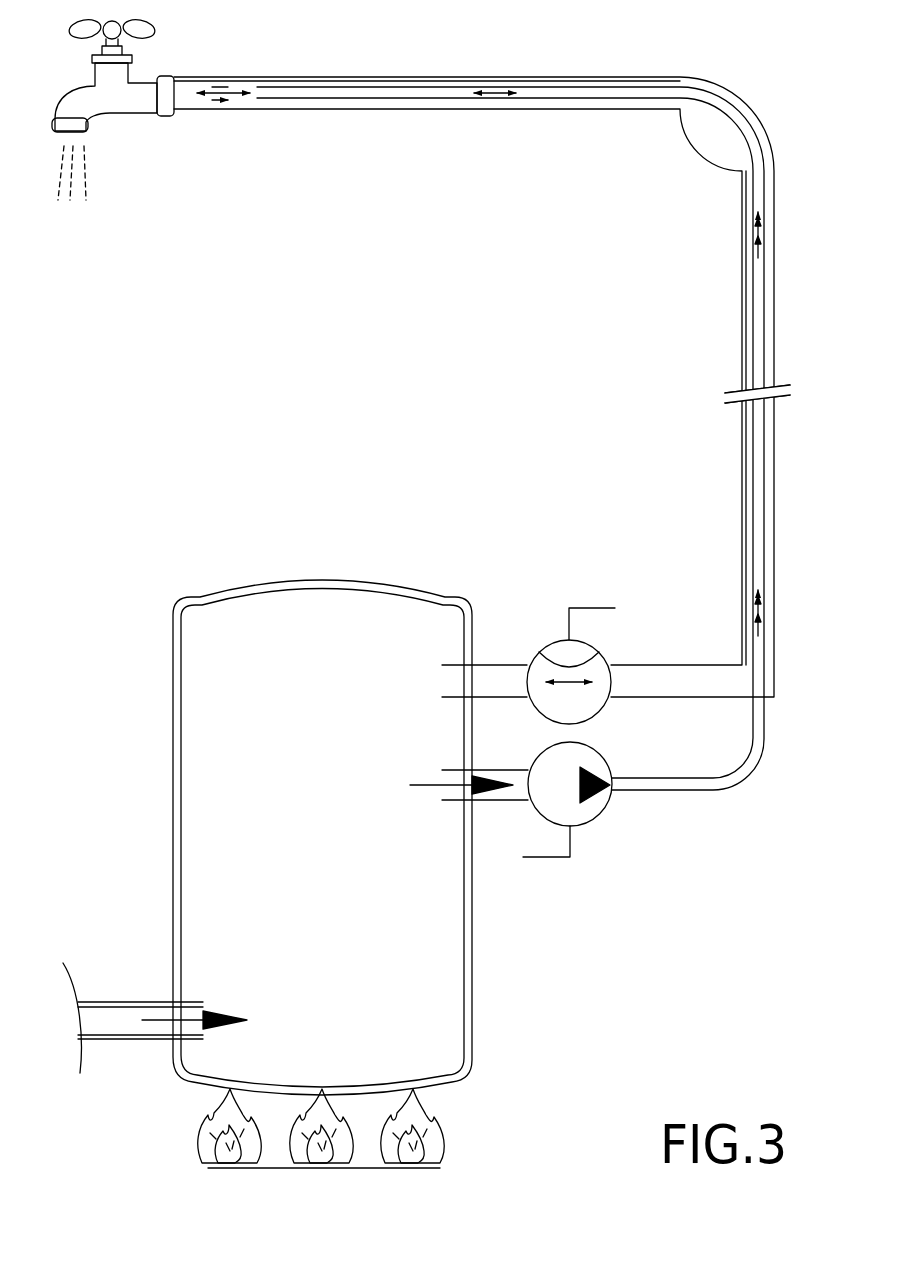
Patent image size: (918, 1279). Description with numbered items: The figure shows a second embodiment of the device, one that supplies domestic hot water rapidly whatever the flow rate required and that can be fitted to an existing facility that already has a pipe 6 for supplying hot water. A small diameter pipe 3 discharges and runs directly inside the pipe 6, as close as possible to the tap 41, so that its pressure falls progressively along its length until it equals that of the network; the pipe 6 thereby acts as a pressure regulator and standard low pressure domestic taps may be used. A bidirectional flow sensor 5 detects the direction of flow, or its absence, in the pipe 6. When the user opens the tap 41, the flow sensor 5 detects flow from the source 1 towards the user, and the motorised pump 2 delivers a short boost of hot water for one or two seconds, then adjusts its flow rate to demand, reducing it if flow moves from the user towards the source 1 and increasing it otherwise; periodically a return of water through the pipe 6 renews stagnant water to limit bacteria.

The source 1 is at (220, 633).
The motorised pump 2 is at (606, 822).
The pipe 3 is at (641, 792).
The bidirectional flow sensor 5 is at (548, 638).
The pipe 6 is at (715, 664).
The tap 41 is at (117, 100).